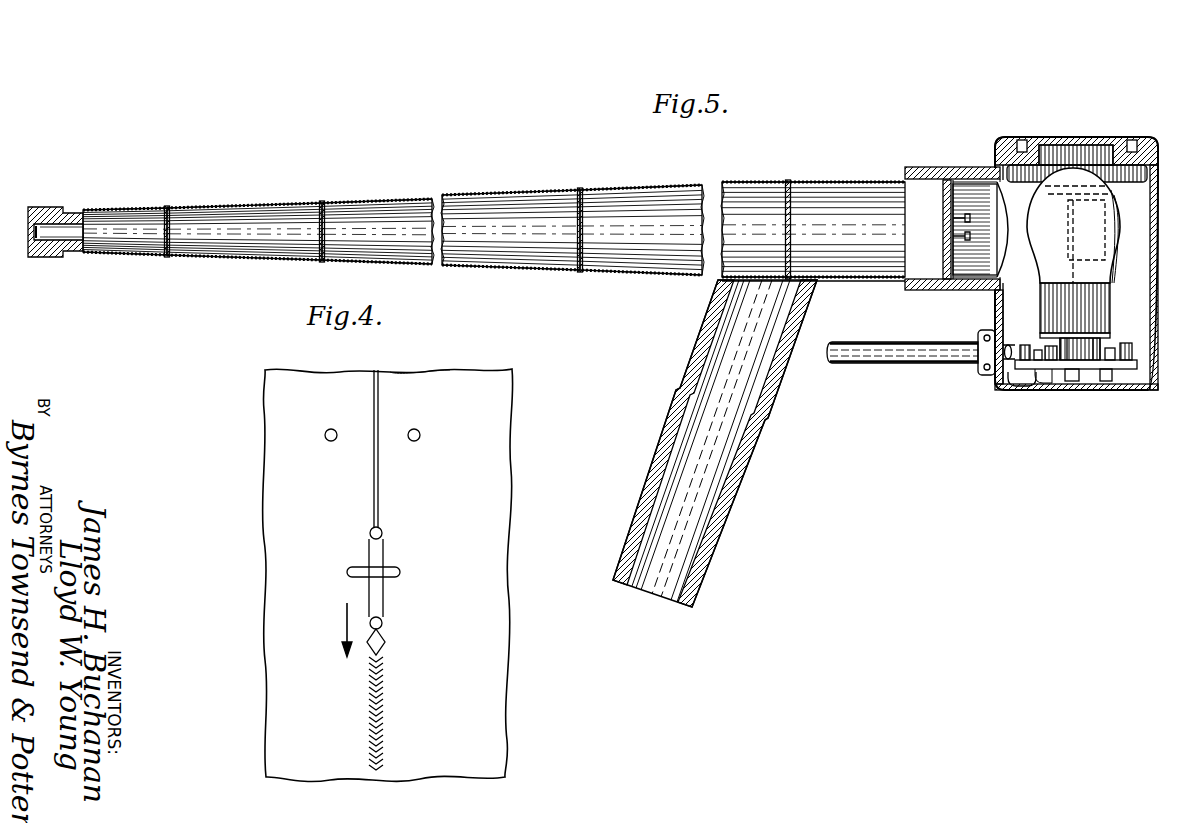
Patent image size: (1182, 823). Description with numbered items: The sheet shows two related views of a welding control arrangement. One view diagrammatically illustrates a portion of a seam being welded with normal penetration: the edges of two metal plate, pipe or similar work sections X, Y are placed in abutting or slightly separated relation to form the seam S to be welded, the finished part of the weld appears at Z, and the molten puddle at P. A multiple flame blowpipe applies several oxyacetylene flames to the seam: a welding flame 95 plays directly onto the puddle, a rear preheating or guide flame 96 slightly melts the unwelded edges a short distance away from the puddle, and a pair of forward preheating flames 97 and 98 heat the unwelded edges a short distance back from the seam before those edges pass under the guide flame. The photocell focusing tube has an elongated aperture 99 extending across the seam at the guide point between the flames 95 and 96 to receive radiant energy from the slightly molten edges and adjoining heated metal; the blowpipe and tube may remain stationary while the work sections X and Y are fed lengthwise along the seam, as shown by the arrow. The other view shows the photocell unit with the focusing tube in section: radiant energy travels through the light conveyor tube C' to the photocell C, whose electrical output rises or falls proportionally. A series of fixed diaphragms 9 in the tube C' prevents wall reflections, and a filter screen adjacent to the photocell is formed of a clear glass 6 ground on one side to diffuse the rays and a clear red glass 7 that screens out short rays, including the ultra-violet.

In FIG. 5, the fixed diaphragms 9 is at (170, 221).
In FIG. 5, the light conveyor tube C' is at (813, 208).
In FIG. 5, the photocell C is at (1076, 244).
In FIG. 5, the clear glass 6 is at (942, 250).
In FIG. 5, the clear red glass 7 is at (955, 258).
In FIG. 4, the work section X is at (330, 376).
In FIG. 4, the work section Y is at (448, 380).
In FIG. 4, the seam S is at (377, 369).
In FIG. 4, the forward preheating flame 97 is at (324, 435).
In FIG. 4, the forward preheating flame 98 is at (421, 435).
In FIG. 4, the rear preheating or guide flame 96 is at (383, 532).
In FIG. 4, the elongated aperture 99 is at (350, 572).
In FIG. 4, the welding flame 95 is at (382, 623).
In FIG. 4, the molten puddle P is at (383, 640).
In FIG. 4, the finished part of the weld Z is at (366, 707).